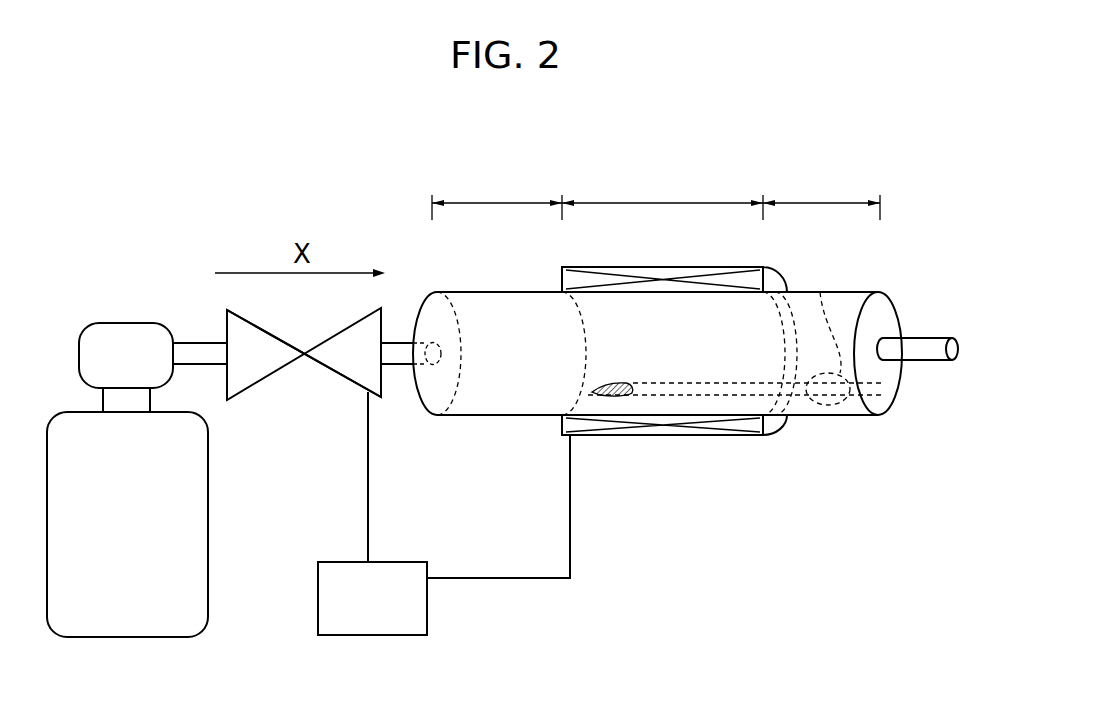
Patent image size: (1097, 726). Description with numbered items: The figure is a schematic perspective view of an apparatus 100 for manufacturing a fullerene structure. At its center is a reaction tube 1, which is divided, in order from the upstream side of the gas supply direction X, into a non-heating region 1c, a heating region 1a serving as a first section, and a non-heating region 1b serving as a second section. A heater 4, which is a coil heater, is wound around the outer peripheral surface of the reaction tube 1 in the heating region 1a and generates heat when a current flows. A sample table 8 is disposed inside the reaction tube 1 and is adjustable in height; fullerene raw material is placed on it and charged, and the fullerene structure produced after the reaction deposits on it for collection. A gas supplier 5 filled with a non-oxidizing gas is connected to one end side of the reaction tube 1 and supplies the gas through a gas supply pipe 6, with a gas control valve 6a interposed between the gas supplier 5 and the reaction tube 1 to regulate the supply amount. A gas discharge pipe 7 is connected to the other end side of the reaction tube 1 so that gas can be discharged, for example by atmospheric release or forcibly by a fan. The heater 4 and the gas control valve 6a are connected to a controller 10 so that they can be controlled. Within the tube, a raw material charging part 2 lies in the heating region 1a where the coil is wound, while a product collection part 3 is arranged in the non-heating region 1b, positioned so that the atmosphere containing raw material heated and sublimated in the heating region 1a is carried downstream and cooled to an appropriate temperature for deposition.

The reaction tube 1 is at (463, 403).
The heating region 1a is at (662, 195).
The non-heating region 1b is at (821, 195).
The non-heating region 1c is at (497, 195).
The raw material charging part 2 is at (622, 440).
The product collection part 3 is at (821, 292).
The heater 4 is at (600, 395).
The gas supplier 5 is at (208, 487).
The gas supply pipe 6 is at (392, 365).
The gas control valve 6a is at (325, 372).
The gas discharge pipe 7 is at (923, 360).
The sample table 8 is at (727, 392).
The controller 10 is at (427, 602).
The apparatus for manufacturing a fullerene structure 100 is at (837, 545).